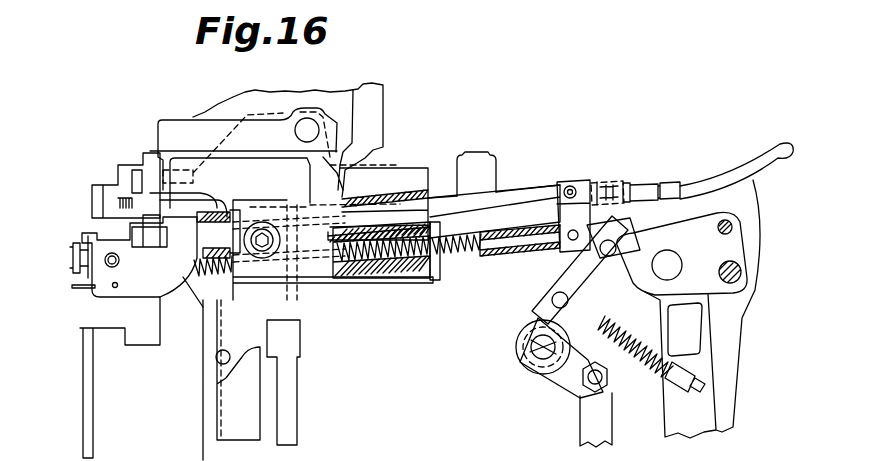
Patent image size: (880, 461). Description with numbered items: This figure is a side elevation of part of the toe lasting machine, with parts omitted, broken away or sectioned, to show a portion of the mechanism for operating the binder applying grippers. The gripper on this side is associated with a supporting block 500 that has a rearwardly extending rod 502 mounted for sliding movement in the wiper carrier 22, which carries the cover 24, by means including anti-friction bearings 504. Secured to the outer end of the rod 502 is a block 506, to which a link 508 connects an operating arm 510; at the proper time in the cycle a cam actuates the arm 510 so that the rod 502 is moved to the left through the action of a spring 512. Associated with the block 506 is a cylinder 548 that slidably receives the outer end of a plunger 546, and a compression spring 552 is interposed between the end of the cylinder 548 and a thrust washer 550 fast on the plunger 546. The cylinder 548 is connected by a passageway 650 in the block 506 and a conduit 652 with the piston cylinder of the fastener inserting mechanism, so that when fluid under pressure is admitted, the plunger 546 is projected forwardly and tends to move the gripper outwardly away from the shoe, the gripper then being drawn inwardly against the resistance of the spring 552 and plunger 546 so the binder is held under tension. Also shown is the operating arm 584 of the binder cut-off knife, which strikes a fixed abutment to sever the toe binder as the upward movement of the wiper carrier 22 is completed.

The cover 24 is at (377, 167).
The anti-friction bearings 504 is at (220, 208).
The rod 502 is at (507, 193).
The block 506 is at (573, 182).
The passageway 650 is at (590, 200).
The conduit 652 is at (773, 148).
The link 508 is at (627, 212).
The operating arm 510 is at (580, 262).
The spring 512 is at (633, 311).
The cylinder 548 is at (500, 258).
The plunger 546 is at (397, 273).
The compression spring 552 is at (437, 275).
The wiper carrier 22 is at (370, 277).
The operating arm 584 is at (73, 258).
The supporting block 500 is at (143, 287).
The thrust washer 550 is at (190, 280).